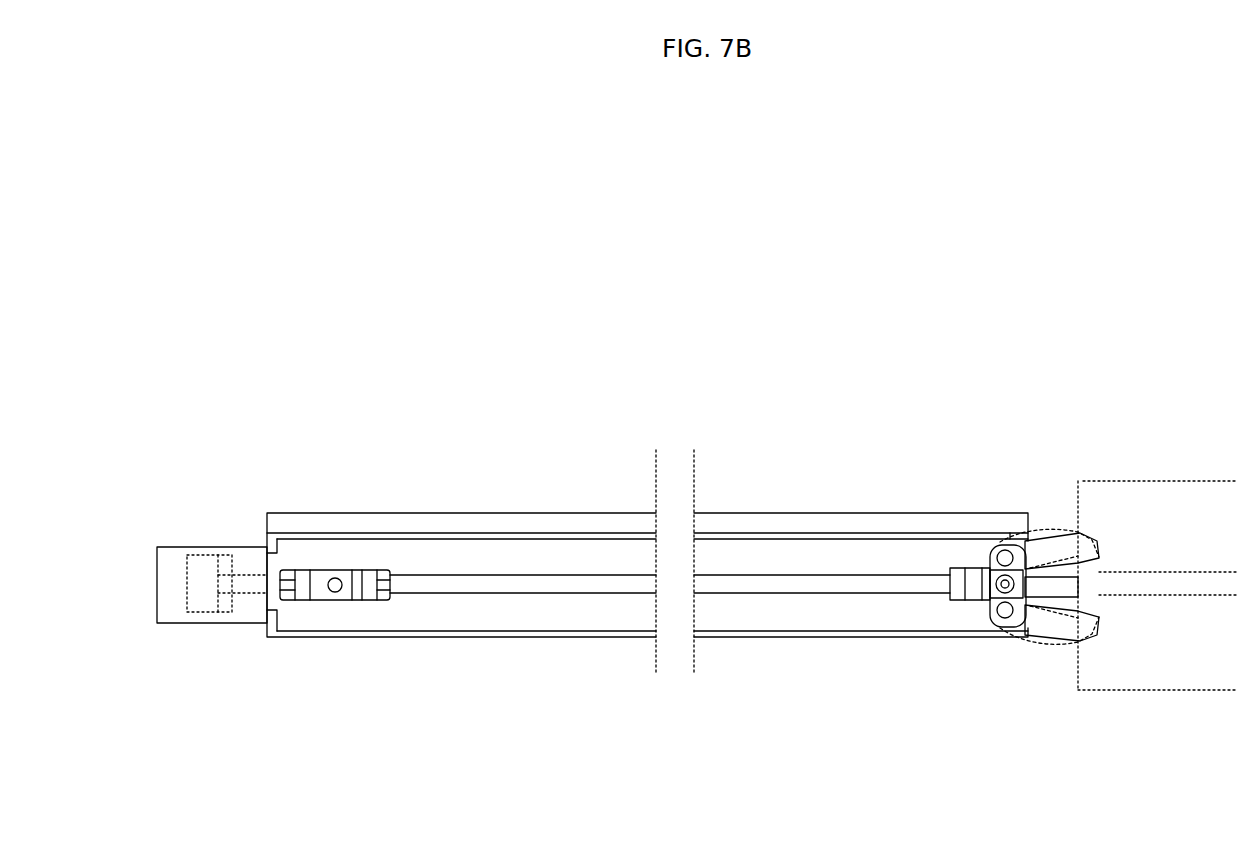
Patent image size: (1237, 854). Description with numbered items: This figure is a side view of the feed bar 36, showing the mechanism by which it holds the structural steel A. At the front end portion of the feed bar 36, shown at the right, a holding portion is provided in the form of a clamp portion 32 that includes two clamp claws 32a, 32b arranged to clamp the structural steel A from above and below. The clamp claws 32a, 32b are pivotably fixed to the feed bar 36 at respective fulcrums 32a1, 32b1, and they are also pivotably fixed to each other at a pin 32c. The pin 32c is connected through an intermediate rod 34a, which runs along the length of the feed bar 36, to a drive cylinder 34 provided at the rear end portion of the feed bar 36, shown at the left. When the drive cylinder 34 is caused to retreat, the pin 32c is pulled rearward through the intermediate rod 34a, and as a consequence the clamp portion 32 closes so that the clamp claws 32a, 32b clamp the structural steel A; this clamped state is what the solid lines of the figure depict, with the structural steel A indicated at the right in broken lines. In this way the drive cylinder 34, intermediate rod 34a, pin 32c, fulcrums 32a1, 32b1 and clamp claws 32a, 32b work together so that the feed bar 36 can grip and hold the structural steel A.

The clamp portion 32 is at (994, 574).
The clamp claw 32a is at (1058, 534).
The fulcrum 32a1 is at (1003, 540).
The clamp claw 32b is at (1050, 642).
The fulcrum 32b1 is at (1005, 632).
The pin 32c is at (982, 600).
The drive cylinder 34 is at (202, 546).
The intermediate rod 34a is at (507, 586).
The feed bar 36 is at (820, 510).
The structural steel A is at (1150, 480).